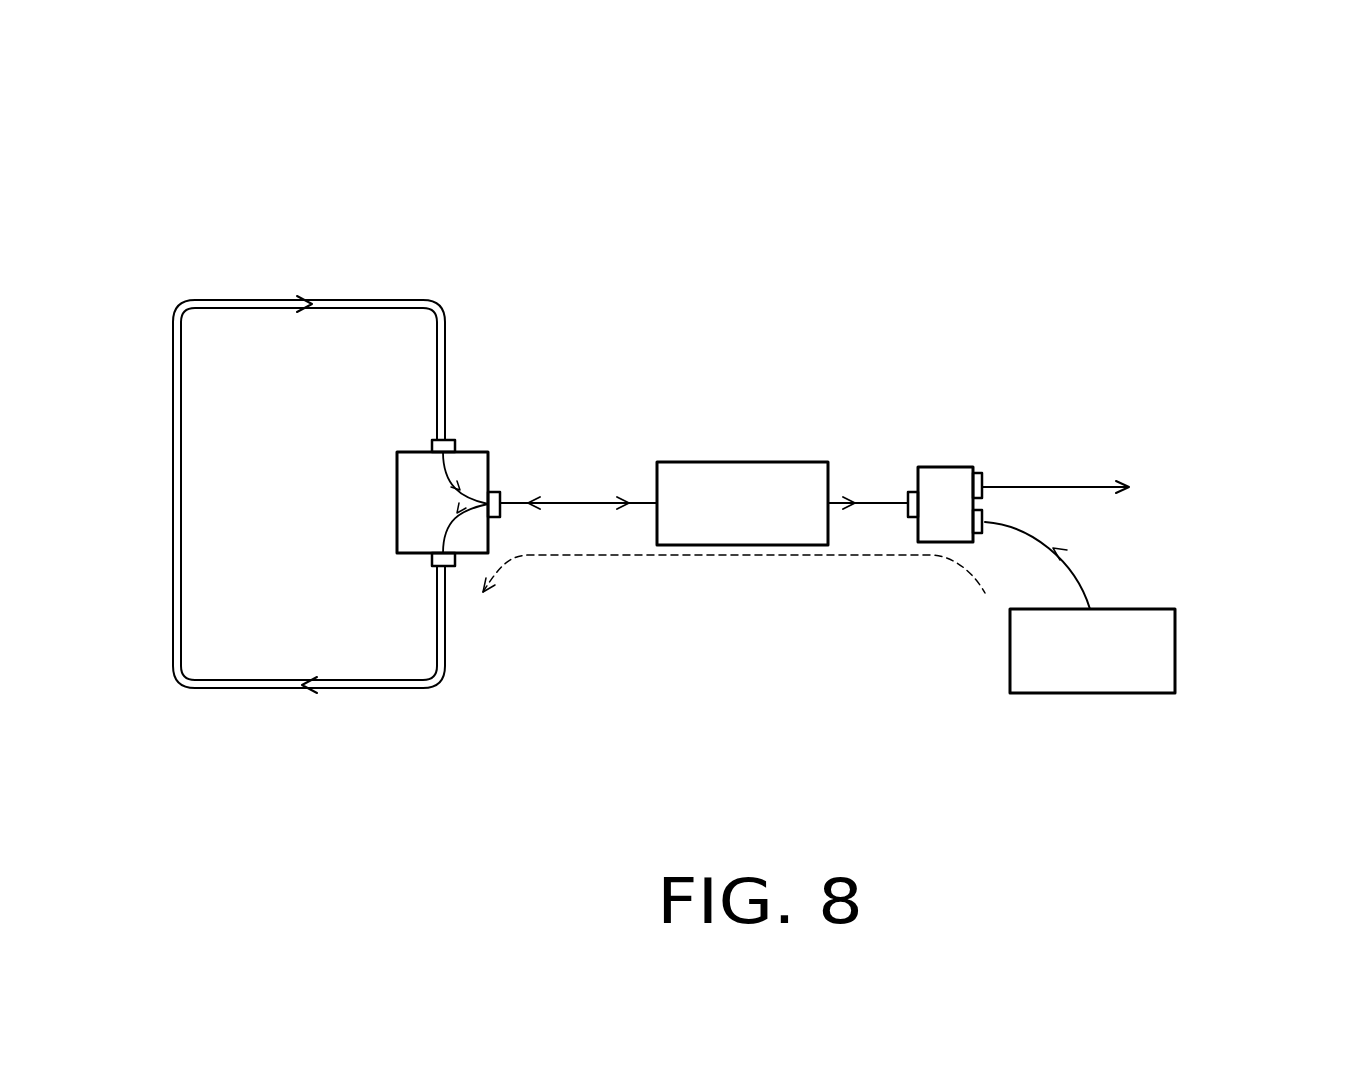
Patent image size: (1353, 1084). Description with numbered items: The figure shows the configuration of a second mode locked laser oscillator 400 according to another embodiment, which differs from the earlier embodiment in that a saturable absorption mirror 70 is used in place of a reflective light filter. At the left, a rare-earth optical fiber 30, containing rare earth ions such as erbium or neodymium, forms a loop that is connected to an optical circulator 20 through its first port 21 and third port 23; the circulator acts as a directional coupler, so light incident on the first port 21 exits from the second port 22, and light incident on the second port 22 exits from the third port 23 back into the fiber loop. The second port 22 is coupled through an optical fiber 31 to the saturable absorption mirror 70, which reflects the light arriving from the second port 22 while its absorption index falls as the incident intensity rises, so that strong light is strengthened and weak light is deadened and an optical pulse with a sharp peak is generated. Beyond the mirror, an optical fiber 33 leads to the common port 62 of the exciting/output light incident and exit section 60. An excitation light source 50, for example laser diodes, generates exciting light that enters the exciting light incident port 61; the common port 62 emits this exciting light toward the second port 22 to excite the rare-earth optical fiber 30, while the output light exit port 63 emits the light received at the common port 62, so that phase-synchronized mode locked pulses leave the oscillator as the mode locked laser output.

The second mode locked laser oscillator 400 is at (152, 101).
The rare-earth optical fiber 30 is at (173, 500).
The optical circulator 20 is at (467, 422).
The first port 21 is at (433, 440).
The second port 22 is at (497, 492).
The third port 23 is at (430, 567).
The optical fiber 31 is at (586, 502).
The saturable absorption mirror 70 is at (742, 462).
The optical fiber 33 is at (872, 502).
The exciting/output light incident and exit section 60 is at (945, 452).
The exciting light incident port 61 is at (985, 534).
The common port 62 is at (912, 492).
The output light exit port 63 is at (978, 473).
The excitation light source 50 is at (1175, 650).